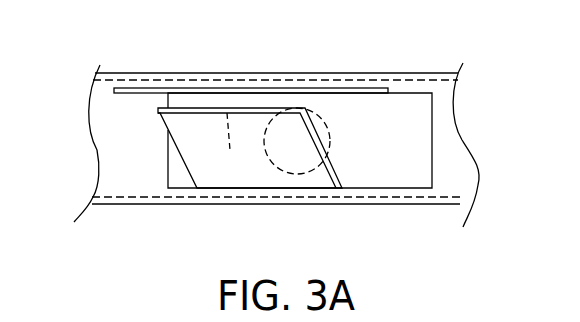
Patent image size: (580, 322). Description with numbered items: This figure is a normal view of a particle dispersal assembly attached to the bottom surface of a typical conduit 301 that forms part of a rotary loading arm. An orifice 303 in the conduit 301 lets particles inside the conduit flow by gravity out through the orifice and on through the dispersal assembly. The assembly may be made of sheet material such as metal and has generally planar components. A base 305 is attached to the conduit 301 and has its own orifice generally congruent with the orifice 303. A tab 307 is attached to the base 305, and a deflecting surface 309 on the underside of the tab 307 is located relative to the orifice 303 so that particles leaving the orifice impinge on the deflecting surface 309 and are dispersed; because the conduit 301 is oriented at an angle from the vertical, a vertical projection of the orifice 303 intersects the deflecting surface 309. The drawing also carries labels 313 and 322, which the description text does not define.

The conduit 301 is at (120, 175).
The orifice 303 is at (328, 128).
The base 305 is at (412, 157).
The tab 307 is at (175, 173).
The deflecting surface 309 is at (227, 113).
The plate 313 is at (135, 95).
The wall 322 is at (347, 83).